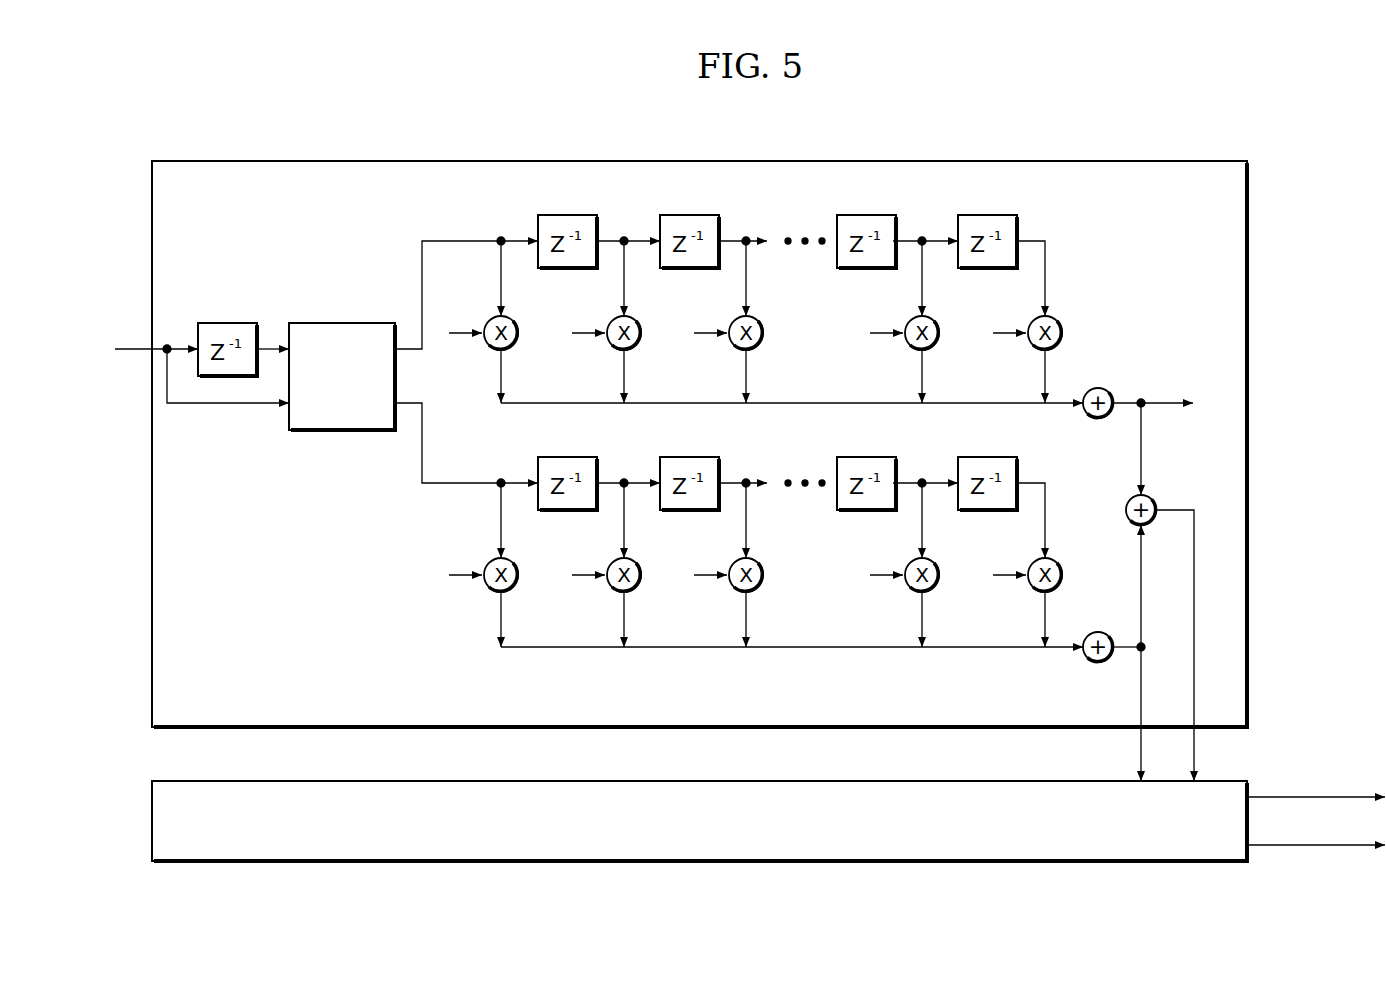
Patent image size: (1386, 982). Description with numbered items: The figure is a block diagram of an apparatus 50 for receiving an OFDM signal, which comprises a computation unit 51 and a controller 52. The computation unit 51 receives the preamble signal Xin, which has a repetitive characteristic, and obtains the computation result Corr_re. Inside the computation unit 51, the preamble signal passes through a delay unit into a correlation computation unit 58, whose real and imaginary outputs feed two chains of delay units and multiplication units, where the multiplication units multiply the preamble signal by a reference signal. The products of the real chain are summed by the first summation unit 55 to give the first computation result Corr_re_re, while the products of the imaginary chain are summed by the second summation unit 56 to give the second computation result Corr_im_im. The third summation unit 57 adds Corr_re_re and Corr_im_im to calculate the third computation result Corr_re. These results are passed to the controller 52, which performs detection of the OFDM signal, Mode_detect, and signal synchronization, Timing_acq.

The apparatus for receiving an OFDM signal 50 is at (1292, 181).
The computation unit 51 is at (1070, 161).
The controller 52 is at (1070, 781).
The first summation unit 55 is at (1098, 387).
The second summation unit 56 is at (1098, 631).
The third summation unit 57 is at (1128, 502).
The correlation computation unit 58 is at (345, 323).